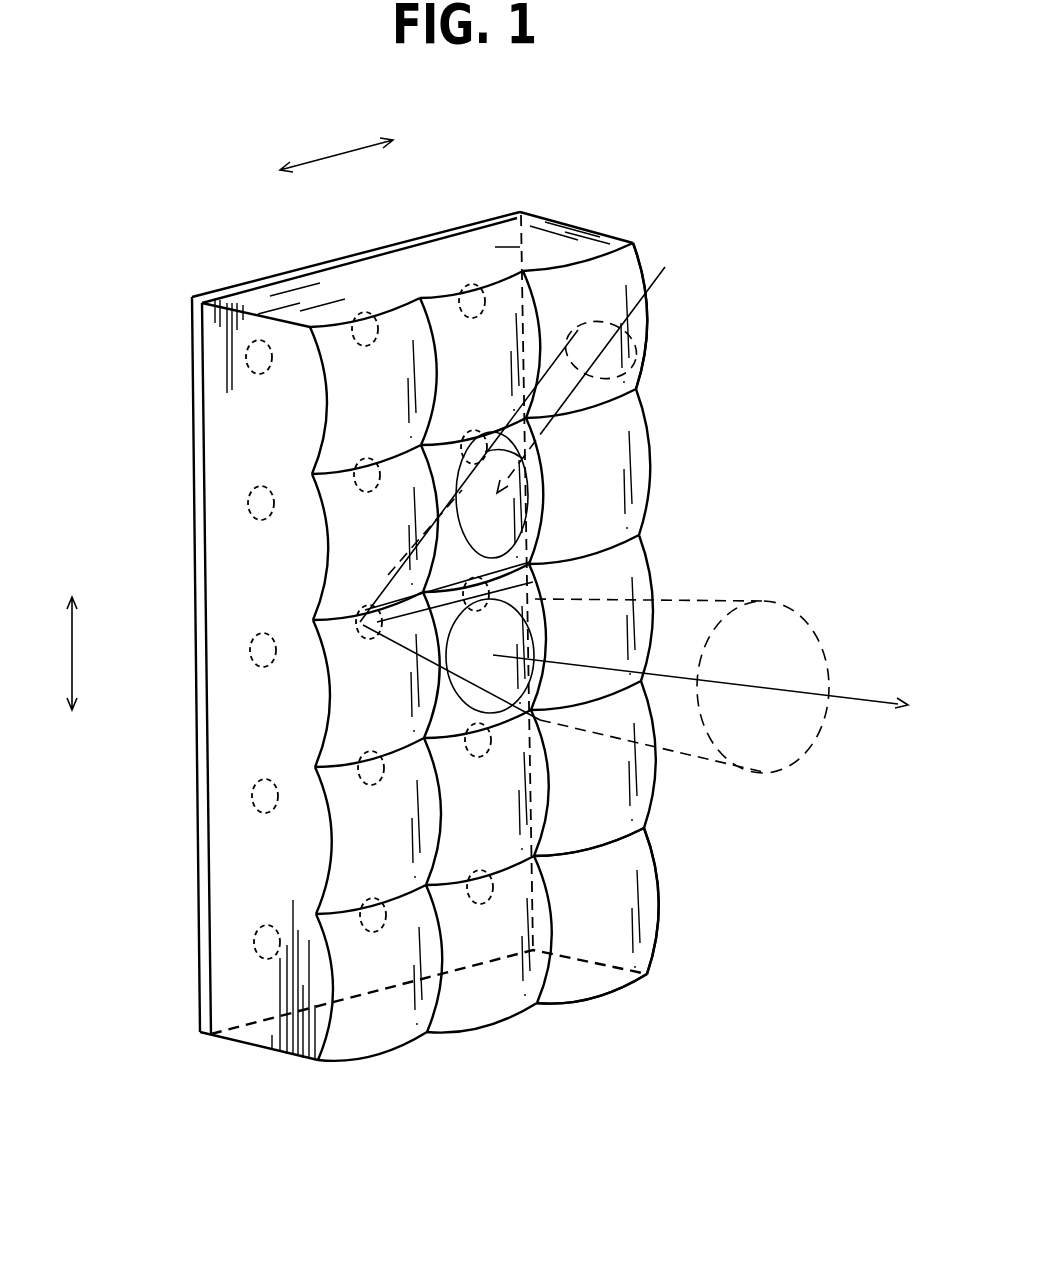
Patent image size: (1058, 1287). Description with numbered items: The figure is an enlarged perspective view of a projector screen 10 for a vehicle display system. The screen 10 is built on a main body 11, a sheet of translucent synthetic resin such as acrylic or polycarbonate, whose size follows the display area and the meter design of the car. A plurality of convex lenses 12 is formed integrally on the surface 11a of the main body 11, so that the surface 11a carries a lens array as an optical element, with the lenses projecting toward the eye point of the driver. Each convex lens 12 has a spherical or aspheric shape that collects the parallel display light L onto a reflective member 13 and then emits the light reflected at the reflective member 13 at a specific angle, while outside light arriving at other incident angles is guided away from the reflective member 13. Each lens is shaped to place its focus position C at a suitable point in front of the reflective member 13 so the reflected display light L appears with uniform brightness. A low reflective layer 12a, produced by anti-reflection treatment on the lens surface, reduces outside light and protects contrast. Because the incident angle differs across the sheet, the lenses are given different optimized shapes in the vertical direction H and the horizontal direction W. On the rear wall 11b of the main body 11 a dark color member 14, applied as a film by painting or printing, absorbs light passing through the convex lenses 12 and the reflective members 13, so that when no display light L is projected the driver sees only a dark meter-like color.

The screen 10 is at (506, 204).
The main body 11 is at (574, 226).
The surface 11a is at (648, 234).
The rear wall 11b is at (534, 203).
The convex lens 12 is at (659, 315).
The low reflective layer 12a is at (673, 902).
The reflective member 13 is at (243, 942).
The dark color member 14 is at (245, 283).
The display light L is at (811, 605).
The focus position C is at (384, 646).
The horizontal direction W is at (334, 150).
The vertical direction H is at (70, 653).